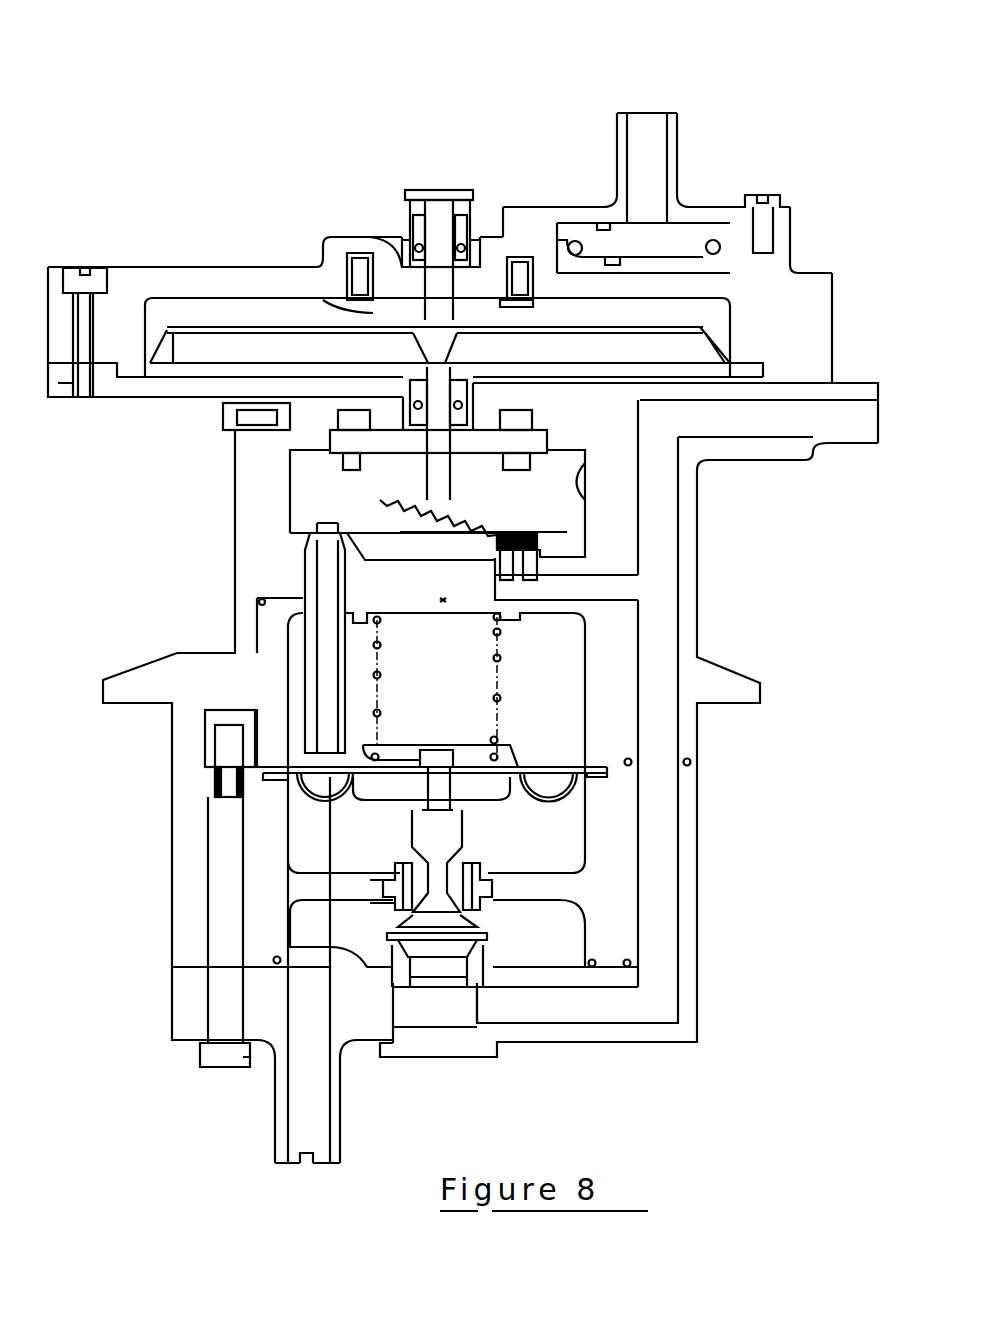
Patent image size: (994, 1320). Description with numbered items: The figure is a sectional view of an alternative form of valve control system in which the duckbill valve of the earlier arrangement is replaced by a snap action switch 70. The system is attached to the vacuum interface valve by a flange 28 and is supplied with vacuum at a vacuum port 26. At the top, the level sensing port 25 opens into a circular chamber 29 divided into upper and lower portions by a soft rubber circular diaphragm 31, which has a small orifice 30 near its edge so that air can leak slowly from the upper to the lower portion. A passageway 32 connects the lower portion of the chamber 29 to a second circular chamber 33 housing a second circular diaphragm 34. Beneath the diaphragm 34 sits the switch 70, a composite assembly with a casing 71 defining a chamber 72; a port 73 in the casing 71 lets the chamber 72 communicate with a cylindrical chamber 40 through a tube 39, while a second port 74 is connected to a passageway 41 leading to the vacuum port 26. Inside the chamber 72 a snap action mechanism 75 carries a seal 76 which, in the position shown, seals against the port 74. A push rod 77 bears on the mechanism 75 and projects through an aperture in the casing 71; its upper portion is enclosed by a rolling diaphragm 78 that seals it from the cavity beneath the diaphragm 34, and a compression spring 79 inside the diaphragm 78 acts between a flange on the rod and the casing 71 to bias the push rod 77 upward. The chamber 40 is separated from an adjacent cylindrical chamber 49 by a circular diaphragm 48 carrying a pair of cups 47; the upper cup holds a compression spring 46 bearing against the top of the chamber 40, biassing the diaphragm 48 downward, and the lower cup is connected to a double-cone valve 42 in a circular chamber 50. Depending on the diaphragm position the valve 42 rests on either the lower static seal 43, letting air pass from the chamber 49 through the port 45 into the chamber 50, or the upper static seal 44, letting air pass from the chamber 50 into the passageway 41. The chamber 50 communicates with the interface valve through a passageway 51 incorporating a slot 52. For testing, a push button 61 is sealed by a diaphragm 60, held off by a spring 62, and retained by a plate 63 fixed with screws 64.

The level sensing port 25 is at (678, 113).
The vacuum port 26 is at (840, 443).
The flange 28 is at (763, 685).
The circular chamber 29 is at (717, 237).
The orifice 30 is at (577, 247).
The circular diaphragm 31 is at (640, 247).
The passageway 32 is at (792, 267).
The second circular chamber 33 is at (720, 317).
The second circular diaphragm 34 is at (720, 347).
The tube 39 is at (327, 690).
The cylindrical chamber 40 is at (568, 647).
The passageway 41 is at (657, 620).
The double-cone valve 42 is at (483, 940).
The lower static seal 43 is at (470, 983).
The upper static seal 44 is at (400, 862).
The port 45 is at (455, 872).
The compression spring 46 is at (493, 700).
The cups 47 is at (512, 762).
The circular diaphragm 48 is at (580, 785).
The cylindrical chamber 49 is at (322, 822).
The circular chamber 50 is at (330, 923).
The passageway 51 is at (305, 1088).
The slot 52 is at (307, 1165).
The diaphragm 60 is at (470, 210).
The push button 61 is at (440, 210).
The spring 62 is at (402, 245).
The plate 63 is at (393, 288).
The screws 64 is at (320, 285).
The snap action switch 70 is at (290, 491).
The casing 71 is at (577, 462).
The chamber 72 is at (313, 463).
The port 73 is at (327, 540).
The port 74 is at (523, 567).
The snap action mechanism 75 is at (392, 497).
The seal 76 is at (543, 543).
The push rod 77 is at (440, 478).
The rolling diaphragm 78 is at (390, 410).
The compression spring 79 is at (405, 398).